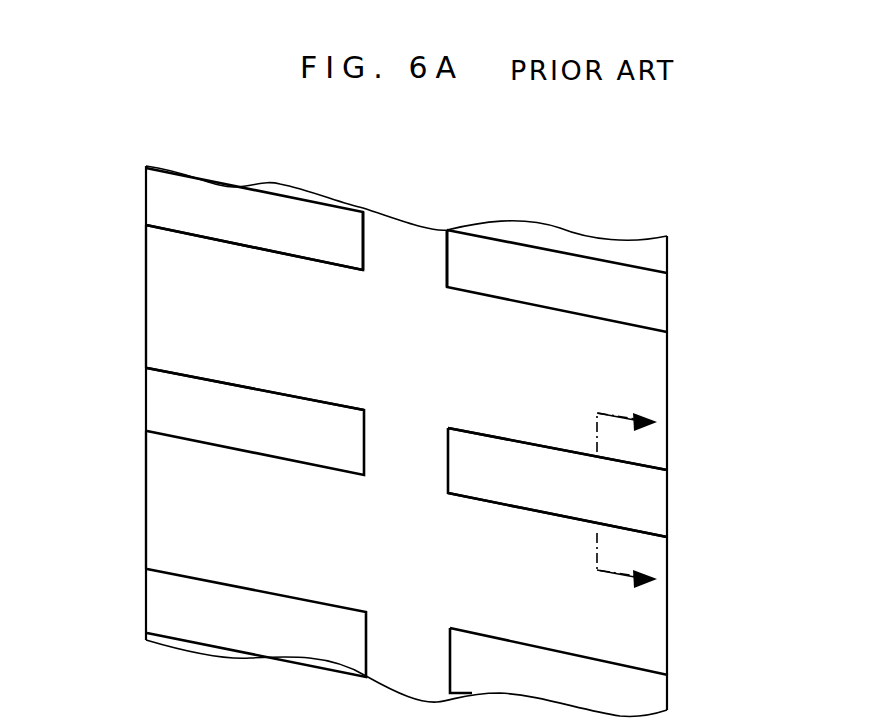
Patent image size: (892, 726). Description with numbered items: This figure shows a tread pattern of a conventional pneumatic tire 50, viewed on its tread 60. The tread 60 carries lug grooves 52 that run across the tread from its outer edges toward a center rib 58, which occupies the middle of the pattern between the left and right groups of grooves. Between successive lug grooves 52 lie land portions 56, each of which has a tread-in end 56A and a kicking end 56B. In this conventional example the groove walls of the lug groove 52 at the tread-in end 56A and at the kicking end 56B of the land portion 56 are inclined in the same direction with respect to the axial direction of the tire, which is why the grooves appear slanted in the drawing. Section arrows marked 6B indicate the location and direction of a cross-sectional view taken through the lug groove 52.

The pneumatic tire 50 is at (103, 127).
The tread 60 is at (110, 214).
The lug groove 52 is at (167, 403).
The land portion 56 is at (145, 297).
The tread-in end 56A is at (253, 244).
The kicking end 56B is at (243, 387).
The center rib 58 is at (445, 201).
The section line 6B is at (627, 503).